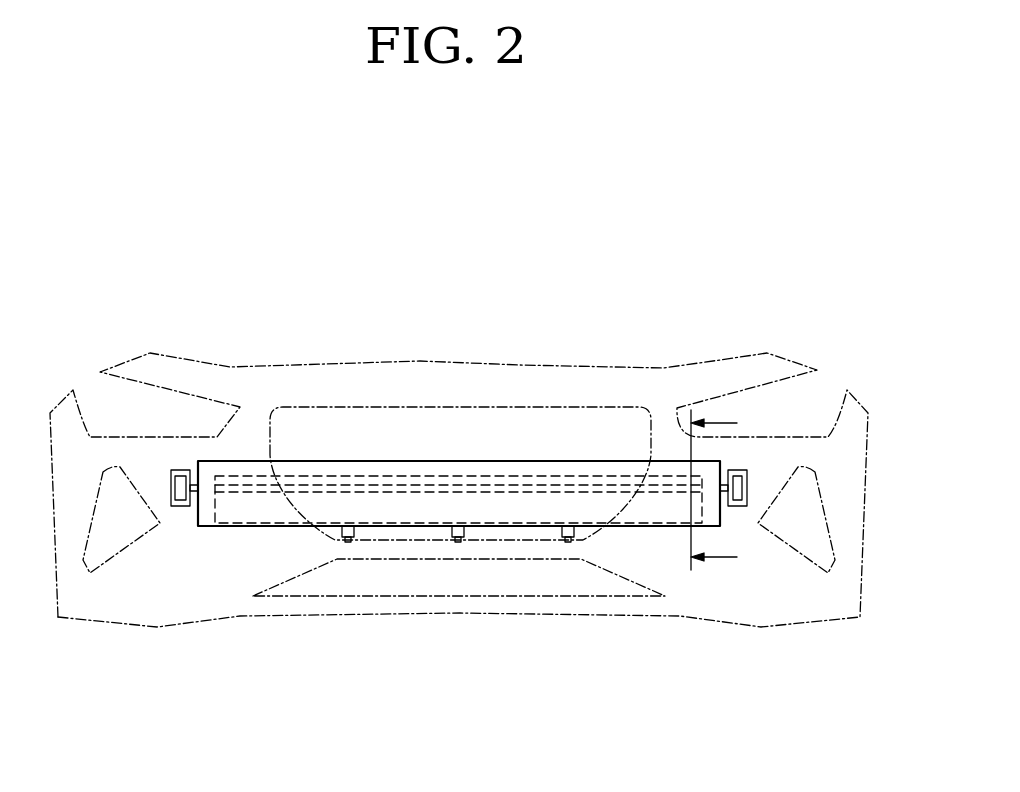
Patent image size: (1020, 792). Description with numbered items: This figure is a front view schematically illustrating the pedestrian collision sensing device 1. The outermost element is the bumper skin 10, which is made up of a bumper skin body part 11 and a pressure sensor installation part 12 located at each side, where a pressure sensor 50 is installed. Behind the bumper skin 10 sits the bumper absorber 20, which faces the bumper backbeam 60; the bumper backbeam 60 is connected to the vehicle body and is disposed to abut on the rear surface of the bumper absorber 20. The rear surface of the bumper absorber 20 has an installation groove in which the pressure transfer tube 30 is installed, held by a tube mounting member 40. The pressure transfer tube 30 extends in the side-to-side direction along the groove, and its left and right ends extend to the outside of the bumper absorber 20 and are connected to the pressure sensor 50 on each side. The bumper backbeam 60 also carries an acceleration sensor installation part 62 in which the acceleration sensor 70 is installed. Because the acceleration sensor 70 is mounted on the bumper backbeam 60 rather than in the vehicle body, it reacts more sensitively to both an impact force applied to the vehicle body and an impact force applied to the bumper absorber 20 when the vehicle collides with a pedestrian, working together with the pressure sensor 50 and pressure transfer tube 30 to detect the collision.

The pedestrian collision sensing device 1 is at (713, 174).
The bumper skin 10 is at (667, 370).
The bumper skin body part 11 is at (640, 557).
The pressure sensor installation part 12 is at (183, 506).
The bumper absorber 20 is at (488, 467).
The pressure transfer tube 30 is at (222, 461).
The tube mounting member 40 is at (375, 483).
The pressure sensor 50 is at (183, 470).
The bumper backbeam 60 is at (587, 475).
The acceleration sensor installation part 62 is at (347, 528).
The acceleration sensor 70 is at (566, 543).